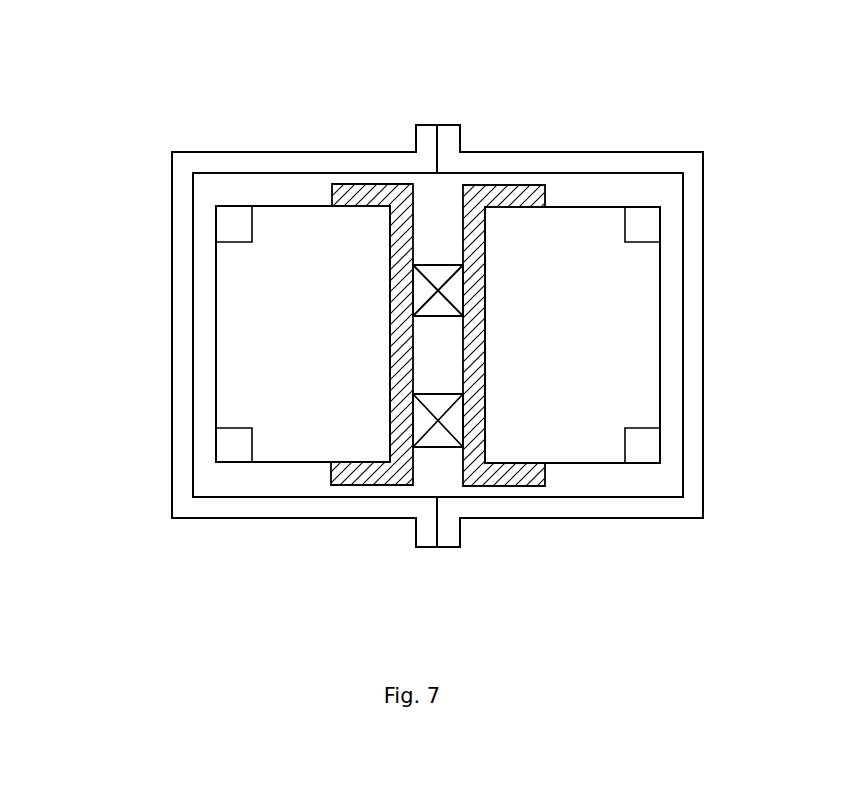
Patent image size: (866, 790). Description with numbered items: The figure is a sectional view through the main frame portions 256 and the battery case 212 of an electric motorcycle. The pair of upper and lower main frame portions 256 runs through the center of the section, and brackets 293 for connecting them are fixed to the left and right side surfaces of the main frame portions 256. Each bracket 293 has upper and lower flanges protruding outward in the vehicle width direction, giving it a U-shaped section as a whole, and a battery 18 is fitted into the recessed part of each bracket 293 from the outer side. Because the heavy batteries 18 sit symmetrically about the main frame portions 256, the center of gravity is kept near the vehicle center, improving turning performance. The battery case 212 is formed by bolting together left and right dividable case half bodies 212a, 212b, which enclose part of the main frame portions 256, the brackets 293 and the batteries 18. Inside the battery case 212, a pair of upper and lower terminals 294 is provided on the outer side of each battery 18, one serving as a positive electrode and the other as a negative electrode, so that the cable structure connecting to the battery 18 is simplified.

The battery 18 is at (288, 243).
The battery case 212 is at (708, 161).
The case half body 212a is at (307, 519).
The case half body 212b is at (565, 519).
The main frame portion 256 is at (437, 307).
The bracket 293 is at (333, 203).
The terminal 294 is at (236, 437).